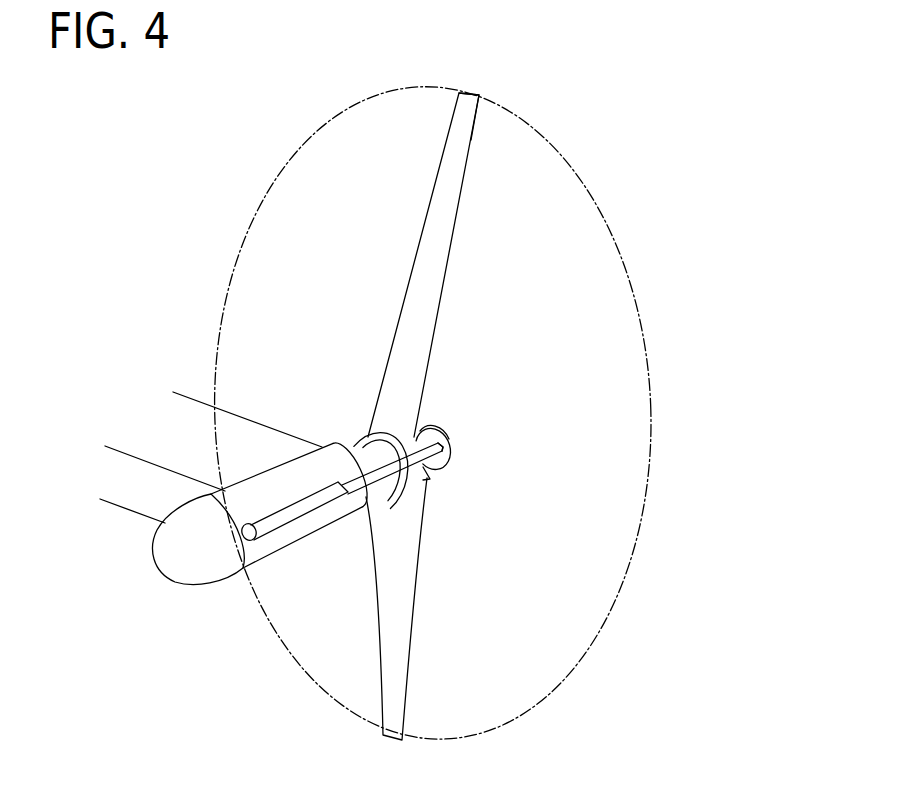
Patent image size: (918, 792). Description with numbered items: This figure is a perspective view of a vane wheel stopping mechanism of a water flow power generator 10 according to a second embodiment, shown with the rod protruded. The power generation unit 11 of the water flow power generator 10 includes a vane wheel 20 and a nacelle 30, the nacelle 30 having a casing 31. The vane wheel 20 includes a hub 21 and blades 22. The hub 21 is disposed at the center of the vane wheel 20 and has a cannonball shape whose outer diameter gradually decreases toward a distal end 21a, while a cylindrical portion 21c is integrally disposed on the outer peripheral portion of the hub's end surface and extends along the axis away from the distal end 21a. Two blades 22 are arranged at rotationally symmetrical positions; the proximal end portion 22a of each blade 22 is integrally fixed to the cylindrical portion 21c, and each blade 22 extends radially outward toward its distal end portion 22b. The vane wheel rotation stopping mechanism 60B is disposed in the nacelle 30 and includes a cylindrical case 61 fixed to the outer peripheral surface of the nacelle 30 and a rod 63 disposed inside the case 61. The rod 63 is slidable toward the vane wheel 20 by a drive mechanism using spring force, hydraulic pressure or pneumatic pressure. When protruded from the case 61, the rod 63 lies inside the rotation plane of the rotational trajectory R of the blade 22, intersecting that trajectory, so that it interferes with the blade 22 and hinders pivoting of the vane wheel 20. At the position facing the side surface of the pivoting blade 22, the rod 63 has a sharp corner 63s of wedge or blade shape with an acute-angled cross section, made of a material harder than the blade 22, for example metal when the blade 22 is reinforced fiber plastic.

The rotational trajectory R is at (255, 233).
The water flow power generator 10 is at (343, 327).
The power generation unit 11 is at (217, 580).
The vane wheel 20 is at (430, 358).
The hub 21 is at (452, 463).
The distal end 21a is at (453, 440).
The cylindrical portion 21c is at (433, 477).
The blade 22 is at (433, 217).
The proximal end portion 22a is at (378, 420).
The distal end portion 22b is at (458, 103).
The nacelle 30 is at (226, 490).
The casing 31 is at (266, 564).
The vane wheel rotation stopping mechanism 60B is at (341, 561).
The case 61 is at (303, 518).
The rod 63 is at (363, 495).
The sharp corner 63s is at (440, 428).